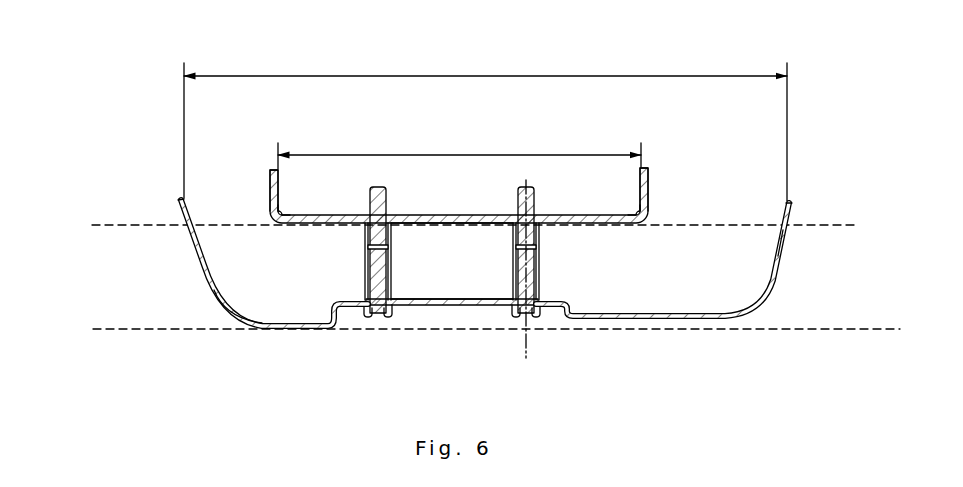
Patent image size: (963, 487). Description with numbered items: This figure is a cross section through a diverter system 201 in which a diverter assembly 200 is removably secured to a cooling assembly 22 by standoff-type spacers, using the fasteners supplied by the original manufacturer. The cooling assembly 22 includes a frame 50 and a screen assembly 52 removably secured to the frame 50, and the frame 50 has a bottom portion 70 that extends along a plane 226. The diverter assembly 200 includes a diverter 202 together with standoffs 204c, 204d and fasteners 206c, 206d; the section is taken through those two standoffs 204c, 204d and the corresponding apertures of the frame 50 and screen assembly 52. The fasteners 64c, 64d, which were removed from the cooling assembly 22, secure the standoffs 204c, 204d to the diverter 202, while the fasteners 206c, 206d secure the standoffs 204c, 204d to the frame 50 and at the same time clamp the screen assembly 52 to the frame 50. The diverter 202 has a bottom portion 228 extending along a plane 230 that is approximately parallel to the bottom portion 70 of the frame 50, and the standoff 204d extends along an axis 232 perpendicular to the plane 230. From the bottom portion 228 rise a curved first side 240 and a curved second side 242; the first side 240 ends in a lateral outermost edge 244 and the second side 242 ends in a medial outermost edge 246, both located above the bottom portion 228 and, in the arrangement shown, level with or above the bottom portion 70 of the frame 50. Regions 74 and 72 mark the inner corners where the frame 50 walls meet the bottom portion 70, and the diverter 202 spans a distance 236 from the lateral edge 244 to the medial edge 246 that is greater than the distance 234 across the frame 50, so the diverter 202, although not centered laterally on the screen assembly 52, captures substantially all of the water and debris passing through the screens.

The distance 236 is at (591, 76).
The distance 234 is at (519, 155).
The diverter system 201 is at (848, 133).
The outermost edge (medial edge) 246 is at (176, 198).
The plane 226 is at (151, 223).
The plane 230 is at (104, 326).
The second side 242 is at (204, 272).
The diverter 202 is at (236, 322).
The frame 50 is at (269, 167).
The cooling assembly 22 is at (647, 166).
The left inner corner 74 is at (277, 221).
The right inner corner 72 is at (640, 221).
The screen assembly 52 is at (414, 212).
The fastener 206c is at (368, 212).
The fastener 206d is at (617, 187).
The standoff 204c is at (366, 264).
The standoff 204d is at (628, 281).
The bottom portion 70 is at (417, 226).
The bottom portion 228 is at (452, 306).
The fastener 64c is at (366, 318).
The fastener 64d is at (539, 317).
The axis 232 is at (529, 334).
The outermost edge (lateral edge) 244 is at (794, 200).
The diverter assembly 200 is at (788, 238).
The first side 240 is at (779, 276).